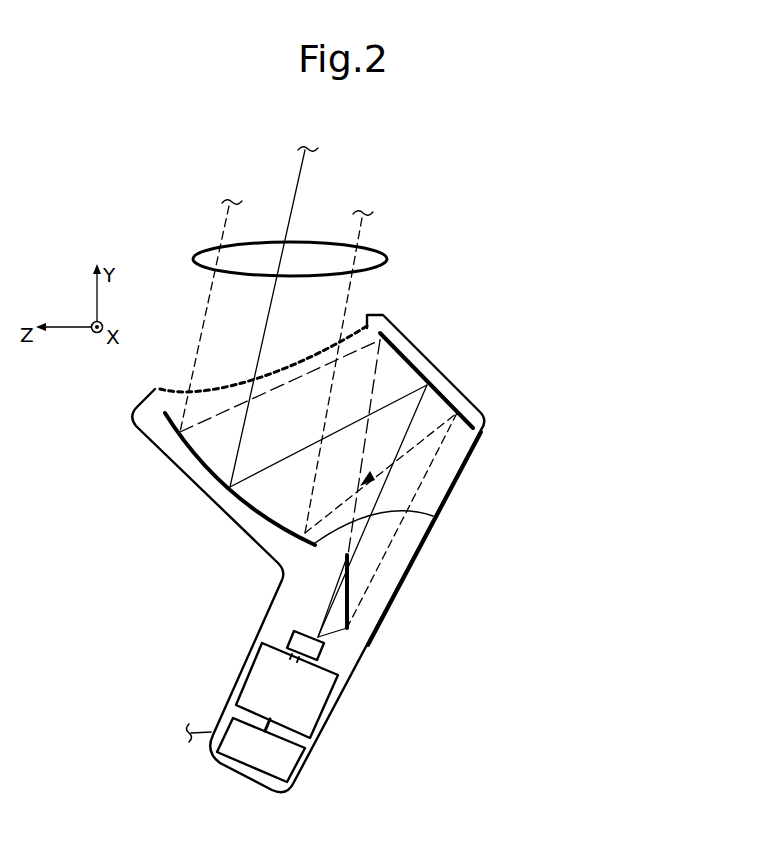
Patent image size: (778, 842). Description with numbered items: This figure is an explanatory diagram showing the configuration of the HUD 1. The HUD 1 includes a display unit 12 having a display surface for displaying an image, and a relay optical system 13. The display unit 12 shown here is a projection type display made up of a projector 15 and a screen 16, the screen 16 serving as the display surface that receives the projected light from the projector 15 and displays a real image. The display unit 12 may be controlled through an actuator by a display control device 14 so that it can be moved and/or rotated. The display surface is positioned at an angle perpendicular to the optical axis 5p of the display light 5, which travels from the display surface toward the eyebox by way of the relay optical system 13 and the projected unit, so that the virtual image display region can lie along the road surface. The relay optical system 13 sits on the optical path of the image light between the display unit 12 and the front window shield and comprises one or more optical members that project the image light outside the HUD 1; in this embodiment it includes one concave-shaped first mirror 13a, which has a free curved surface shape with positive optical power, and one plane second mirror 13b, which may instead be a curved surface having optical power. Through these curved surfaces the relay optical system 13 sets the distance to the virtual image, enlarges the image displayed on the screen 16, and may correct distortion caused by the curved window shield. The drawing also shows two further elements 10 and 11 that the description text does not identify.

The HUD 1 is at (465, 360).
The display light 5 is at (388, 259).
The optical axis 5p is at (302, 179).
The concave mirror 10 is at (162, 388).
The flat mirror 11 is at (470, 400).
The display unit 12 is at (345, 646).
The relay optical system 13 is at (441, 538).
The first mirror 13a is at (433, 516).
The second mirror 13b is at (482, 434).
The display control device 14 is at (304, 750).
The projector 15 is at (335, 690).
The screen 16 is at (349, 630).